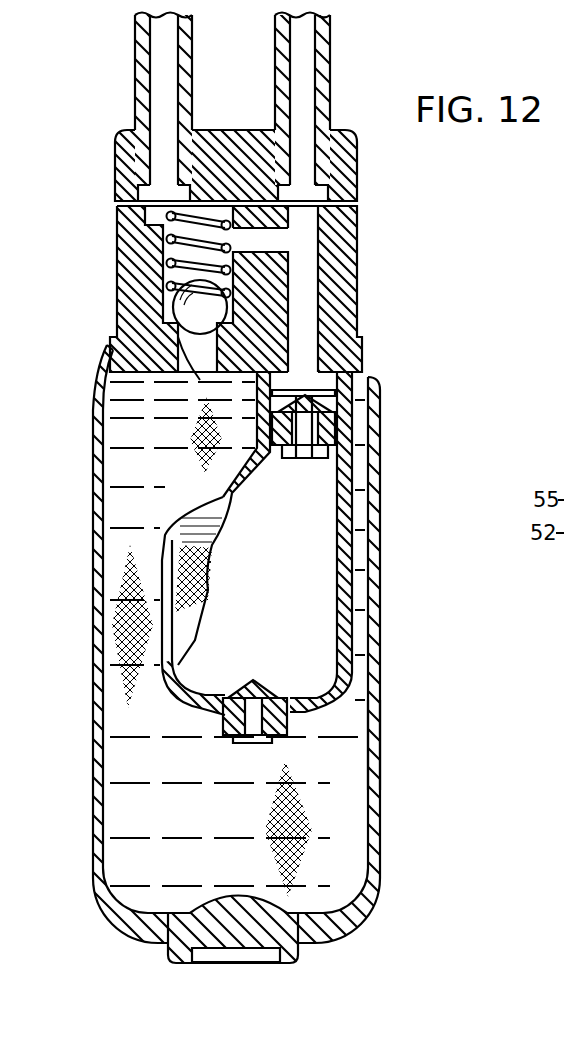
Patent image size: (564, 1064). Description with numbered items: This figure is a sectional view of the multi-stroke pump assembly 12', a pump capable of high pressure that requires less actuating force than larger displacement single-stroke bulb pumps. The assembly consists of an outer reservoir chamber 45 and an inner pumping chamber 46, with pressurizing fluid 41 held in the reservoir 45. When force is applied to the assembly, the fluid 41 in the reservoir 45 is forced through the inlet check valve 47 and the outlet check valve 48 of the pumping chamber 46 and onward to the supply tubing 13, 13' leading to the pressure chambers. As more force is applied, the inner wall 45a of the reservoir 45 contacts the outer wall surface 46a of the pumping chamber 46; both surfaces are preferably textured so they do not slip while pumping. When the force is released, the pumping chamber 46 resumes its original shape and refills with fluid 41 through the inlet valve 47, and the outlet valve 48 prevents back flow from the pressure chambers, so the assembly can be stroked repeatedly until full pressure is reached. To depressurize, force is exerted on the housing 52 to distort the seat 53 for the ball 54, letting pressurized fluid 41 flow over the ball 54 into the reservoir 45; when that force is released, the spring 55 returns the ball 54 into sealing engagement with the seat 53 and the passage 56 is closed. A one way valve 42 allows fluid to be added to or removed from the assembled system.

The supply tubing 13 is at (282, 532).
The supply tubing 13' is at (282, 532).
The housing 52 is at (117, 305).
The spring 55 is at (166, 222).
The ball 54 is at (213, 319).
The seat 53 is at (179, 340).
The passage 56 is at (112, 353).
The outlet check valve 48 is at (323, 400).
The multi-stroke pump assembly 12' is at (282, 532).
The outer reservoir chamber 45 is at (282, 532).
The inner wall 45a is at (367, 768).
The one way valve 42 is at (250, 920).
The pressurizing fluid 41 is at (345, 840).
The inner pumping chamber 46 is at (282, 532).
The outer wall surface 46a is at (185, 568).
The inlet check valve 47 is at (278, 684).